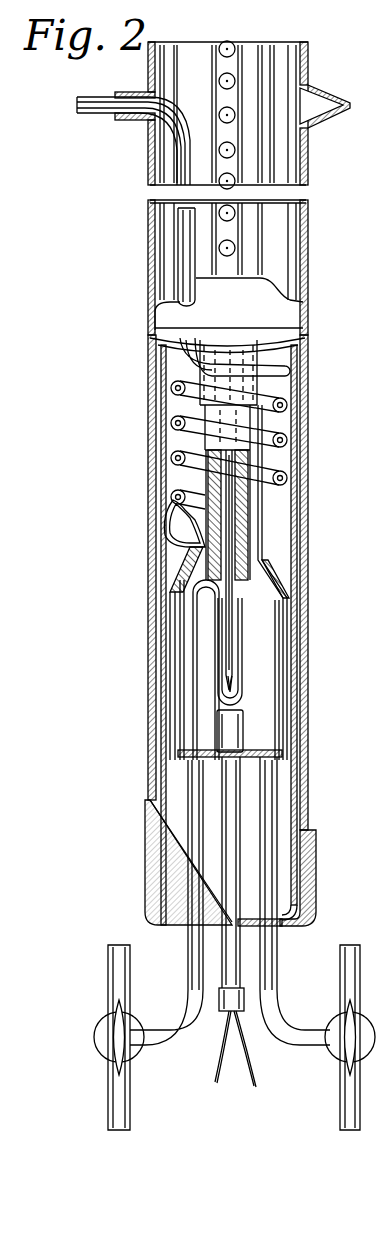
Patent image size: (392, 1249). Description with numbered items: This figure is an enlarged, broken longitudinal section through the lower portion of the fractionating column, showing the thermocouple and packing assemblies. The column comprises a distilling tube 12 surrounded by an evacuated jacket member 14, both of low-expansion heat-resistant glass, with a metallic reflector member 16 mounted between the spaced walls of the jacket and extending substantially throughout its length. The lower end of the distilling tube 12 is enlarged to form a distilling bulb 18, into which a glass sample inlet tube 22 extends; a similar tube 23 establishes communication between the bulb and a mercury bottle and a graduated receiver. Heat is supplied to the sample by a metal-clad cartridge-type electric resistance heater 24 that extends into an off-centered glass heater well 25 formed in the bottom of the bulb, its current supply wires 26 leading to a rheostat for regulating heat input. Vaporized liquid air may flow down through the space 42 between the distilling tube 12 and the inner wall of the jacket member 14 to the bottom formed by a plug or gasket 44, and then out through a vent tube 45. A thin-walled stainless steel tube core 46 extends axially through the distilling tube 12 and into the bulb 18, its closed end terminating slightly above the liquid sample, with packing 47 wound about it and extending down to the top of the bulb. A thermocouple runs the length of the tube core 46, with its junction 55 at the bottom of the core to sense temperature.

The distilling tube 12 is at (272, 521).
The evacuated jacket member 14 is at (308, 548).
The metallic reflector member 16 is at (297, 612).
The distilling bulb 18 is at (242, 704).
The sample inlet tube 22 is at (190, 700).
The tube 23 is at (270, 807).
The electric resistance heater 24 is at (238, 948).
The glass heater well 25 is at (244, 731).
The current supply wires 26 is at (256, 1070).
The space 42 is at (262, 505).
The plug or gasket 44 is at (285, 582).
The vent tube 45 is at (103, 112).
The tube core 46 is at (238, 648).
The packing 47 is at (187, 548).
The junction 55 is at (233, 682).